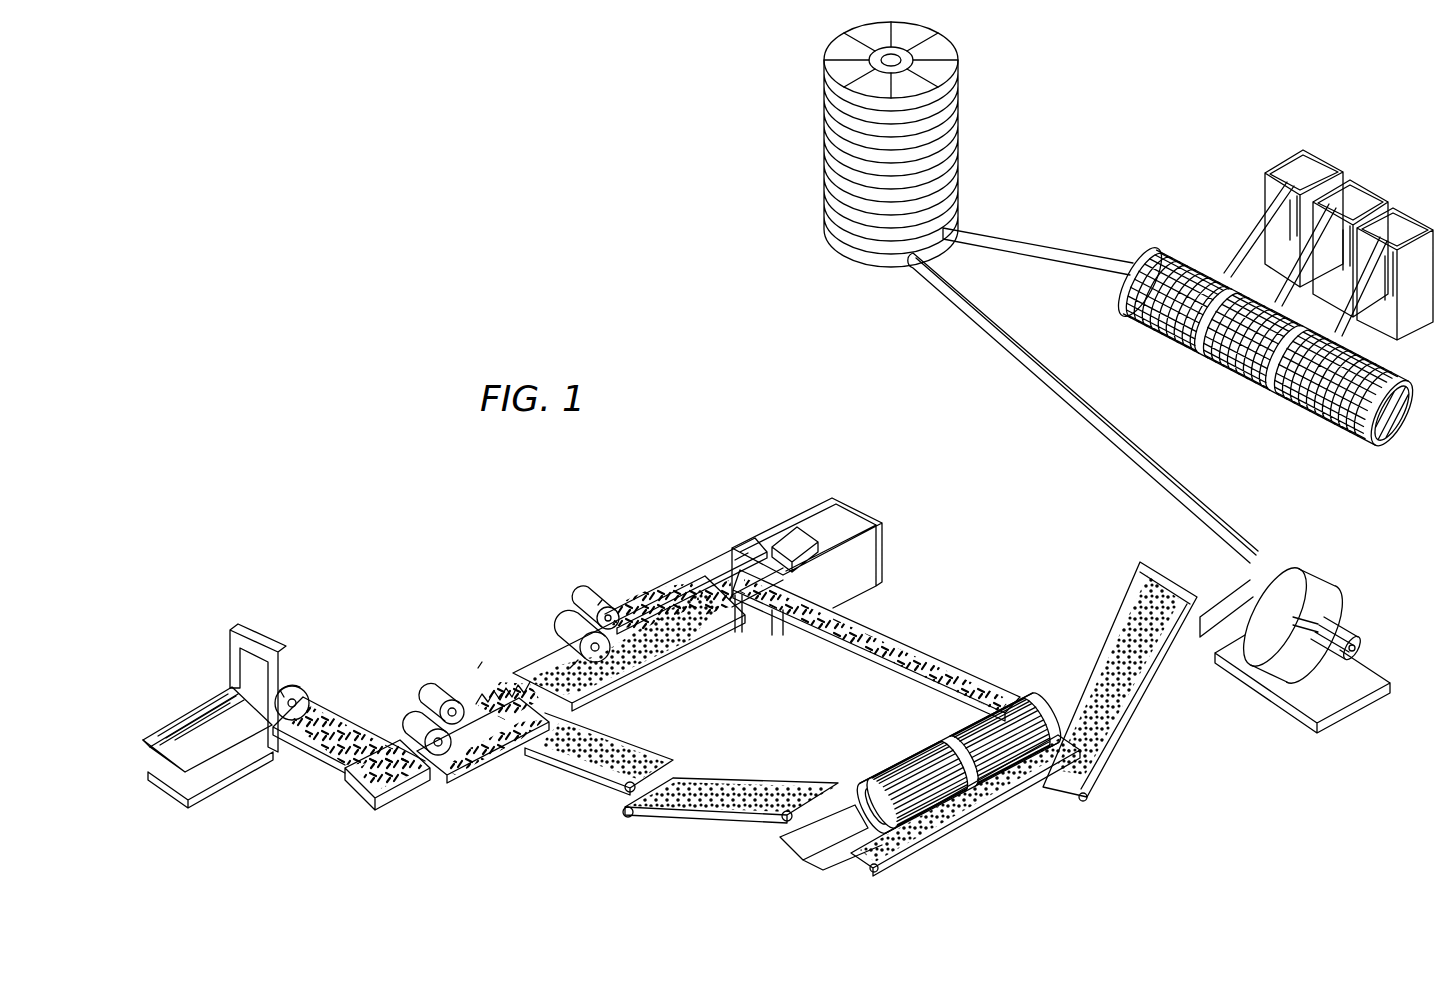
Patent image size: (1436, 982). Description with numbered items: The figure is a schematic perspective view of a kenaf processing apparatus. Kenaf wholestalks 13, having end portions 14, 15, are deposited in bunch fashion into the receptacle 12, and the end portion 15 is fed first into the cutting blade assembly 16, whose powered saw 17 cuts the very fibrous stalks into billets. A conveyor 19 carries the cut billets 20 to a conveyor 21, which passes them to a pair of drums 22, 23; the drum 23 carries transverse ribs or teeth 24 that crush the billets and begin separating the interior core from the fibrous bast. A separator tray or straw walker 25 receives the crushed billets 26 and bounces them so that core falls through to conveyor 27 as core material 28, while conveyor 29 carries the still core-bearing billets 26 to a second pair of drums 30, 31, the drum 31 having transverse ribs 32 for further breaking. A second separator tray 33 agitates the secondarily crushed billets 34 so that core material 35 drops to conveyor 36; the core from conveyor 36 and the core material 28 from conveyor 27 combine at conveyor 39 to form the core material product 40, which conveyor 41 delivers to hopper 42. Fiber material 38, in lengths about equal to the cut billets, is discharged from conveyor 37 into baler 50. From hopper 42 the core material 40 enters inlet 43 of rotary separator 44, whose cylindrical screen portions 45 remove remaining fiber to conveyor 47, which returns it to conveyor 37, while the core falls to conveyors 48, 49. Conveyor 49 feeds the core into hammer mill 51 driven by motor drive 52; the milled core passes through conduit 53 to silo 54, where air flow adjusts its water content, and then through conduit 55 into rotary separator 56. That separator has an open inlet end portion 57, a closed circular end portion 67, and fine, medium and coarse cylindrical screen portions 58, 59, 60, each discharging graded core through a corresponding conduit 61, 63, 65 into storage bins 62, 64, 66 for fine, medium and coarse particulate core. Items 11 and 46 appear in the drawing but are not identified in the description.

The base 11 is at (215, 782).
The receptacle 12 is at (228, 755).
The kenaf wholestalks 13 is at (205, 712).
The end portion 14 is at (150, 740).
The end portion 15 is at (240, 660).
The cutting blade assembly 16 is at (300, 692).
The powered saw 17 is at (283, 690).
The conveyor 19 is at (300, 745).
The cut billets 20 is at (345, 740).
The conveyor 21 is at (433, 790).
The drum 22 is at (422, 715).
The drum 23 is at (447, 695).
The transverse ribs or teeth 24 is at (480, 692).
The separator tray or straw walker 25 is at (495, 675).
The crushed billets 26 is at (480, 660).
The conveyor 27 is at (480, 745).
The core material 28 is at (510, 745).
The conveyor 29 is at (540, 668).
The drum 30 is at (580, 635).
The drum 31 is at (590, 605).
The transverse ribs 32 is at (605, 604).
The second separator tray 33 is at (665, 585).
The secondarily crushed billets 34 is at (640, 590).
The core material 35 is at (630, 665).
The conveyor 36 is at (665, 655).
The conveyor 37 is at (735, 555).
The fiber material 38 is at (722, 607).
The conveyor 39 is at (610, 790).
The core material product 40 is at (680, 780).
The conveyor 41 is at (660, 812).
The hopper 42 is at (790, 856).
The inlet 43 is at (858, 800).
The rotary separator 44 is at (945, 750).
The cylindrical screen portions 45 is at (878, 790).
The rotation direction arrow 46 is at (1040, 694).
The conveyor 47 is at (940, 670).
The conveyor 48 is at (960, 810).
The conveyor 49 is at (1135, 715).
The baler 50 is at (840, 514).
The hammer mill 51 is at (1300, 580).
The motor drive 52 is at (1352, 637).
The conduit 53 is at (1085, 410).
The silo 54 is at (958, 138).
The conduit 55 is at (990, 235).
The rotary separator 56 is at (1155, 260).
The open inlet end portion 57 is at (1118, 298).
The fine mesh size cylindrical screen portion 58 is at (1165, 335).
The medium mesh size cylindrical screen portion 59 is at (1240, 380).
The coarse mesh size cylindrical screen portion 60 is at (1320, 420).
The conduit 61 is at (1255, 255).
The storage bin 62 is at (1295, 160).
The conduit 63 is at (1290, 284).
The storage bin 64 is at (1375, 180).
The conduit 65 is at (1385, 340).
The storage bin 66 is at (1412, 222).
The closed circular end portion 67 is at (1395, 432).